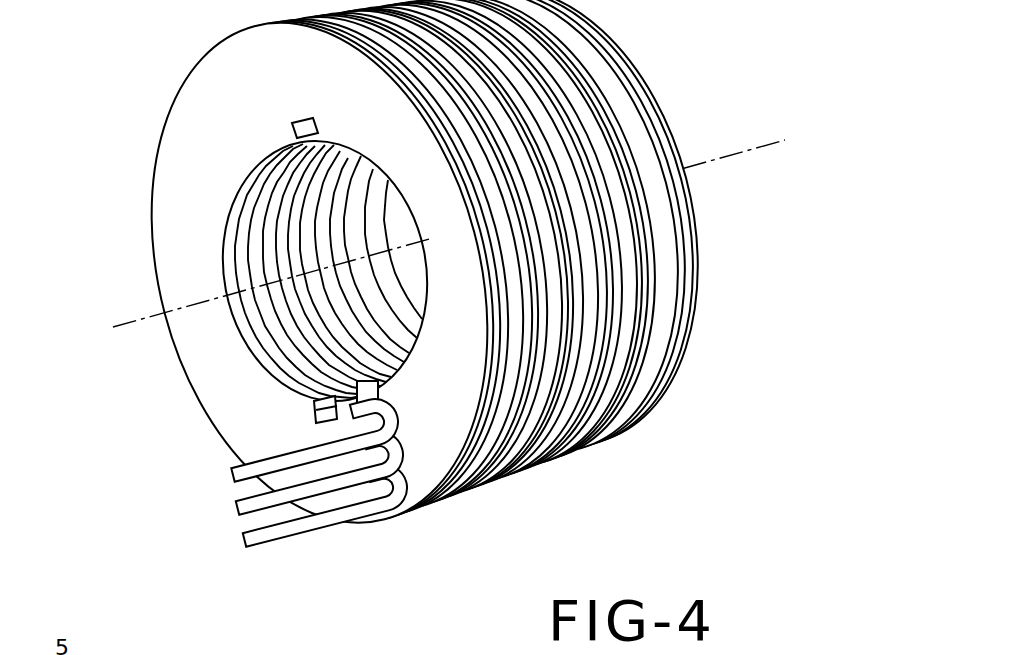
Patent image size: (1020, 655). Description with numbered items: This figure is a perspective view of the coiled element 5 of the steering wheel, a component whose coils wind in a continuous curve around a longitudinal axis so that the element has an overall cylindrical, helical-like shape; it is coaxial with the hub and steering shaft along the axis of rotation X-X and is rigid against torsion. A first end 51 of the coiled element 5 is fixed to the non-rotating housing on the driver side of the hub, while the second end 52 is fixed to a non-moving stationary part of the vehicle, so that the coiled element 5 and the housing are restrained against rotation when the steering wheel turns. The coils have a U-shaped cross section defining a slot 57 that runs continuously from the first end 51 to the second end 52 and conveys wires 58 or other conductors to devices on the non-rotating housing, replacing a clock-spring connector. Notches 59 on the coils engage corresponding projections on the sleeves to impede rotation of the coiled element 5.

The coiled element 5 is at (449, 302).
The first end 51 is at (417, 440).
The second end 52 is at (628, 52).
The slot 57 is at (663, 310).
The wires 58 is at (288, 535).
The notches 59 is at (296, 122).